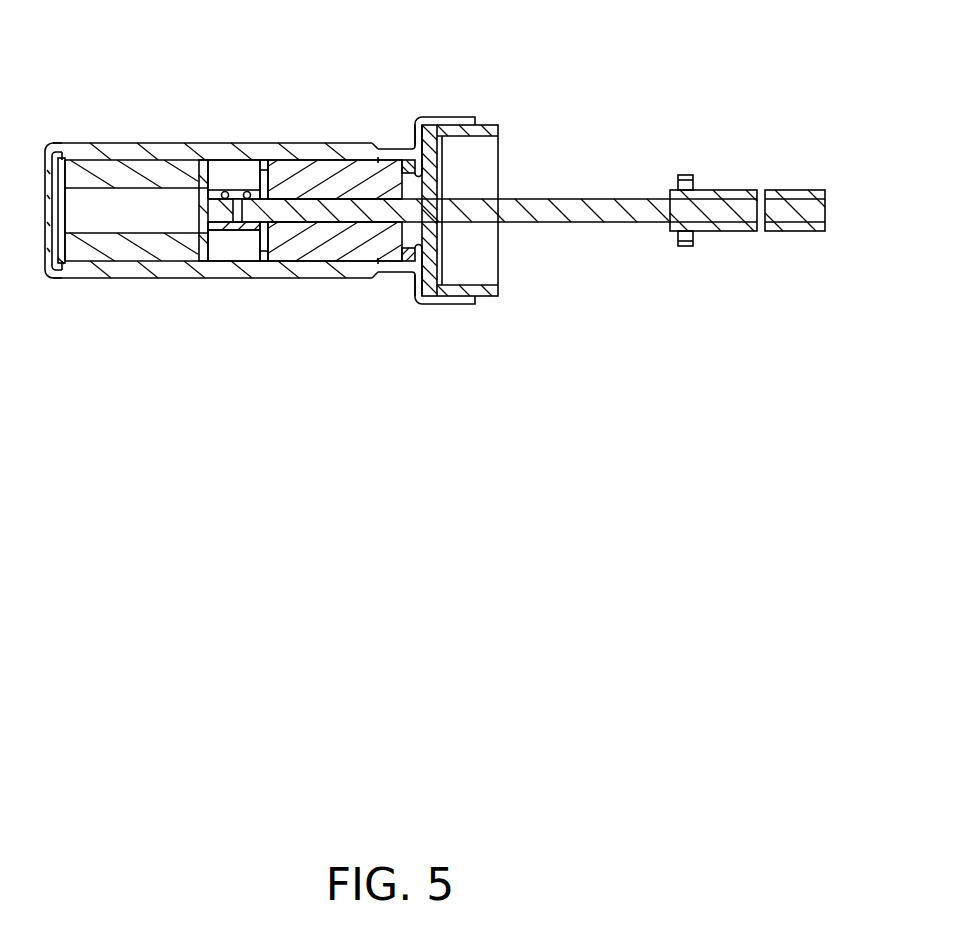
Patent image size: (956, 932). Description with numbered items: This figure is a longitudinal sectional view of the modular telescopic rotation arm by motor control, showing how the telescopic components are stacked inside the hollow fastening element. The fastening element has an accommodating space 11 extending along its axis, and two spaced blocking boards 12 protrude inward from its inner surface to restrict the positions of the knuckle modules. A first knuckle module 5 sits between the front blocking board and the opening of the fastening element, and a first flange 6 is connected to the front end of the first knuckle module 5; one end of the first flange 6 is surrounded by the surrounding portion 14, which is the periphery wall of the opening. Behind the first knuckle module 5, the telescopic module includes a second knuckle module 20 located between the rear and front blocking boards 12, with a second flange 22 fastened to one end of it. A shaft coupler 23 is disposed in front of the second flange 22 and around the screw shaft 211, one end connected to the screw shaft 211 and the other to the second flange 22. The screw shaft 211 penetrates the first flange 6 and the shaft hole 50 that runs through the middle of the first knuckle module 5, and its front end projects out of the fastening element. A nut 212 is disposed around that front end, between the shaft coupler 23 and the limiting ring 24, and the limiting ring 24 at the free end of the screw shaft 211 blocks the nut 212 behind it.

The first knuckle module 5 is at (324, 250).
The first flange 6 is at (434, 296).
The accommodating space 11 is at (393, 148).
The blocking boards 12 is at (64, 150).
The surrounding portion 14 is at (458, 116).
The second knuckle module 20 is at (86, 252).
The second flange 22 is at (205, 165).
The shaft coupler 23 is at (237, 228).
The shaft hole 50 is at (378, 226).
The screw shaft 211 is at (578, 212).
The nut 212 is at (727, 232).
The limiting ring 24 is at (806, 232).